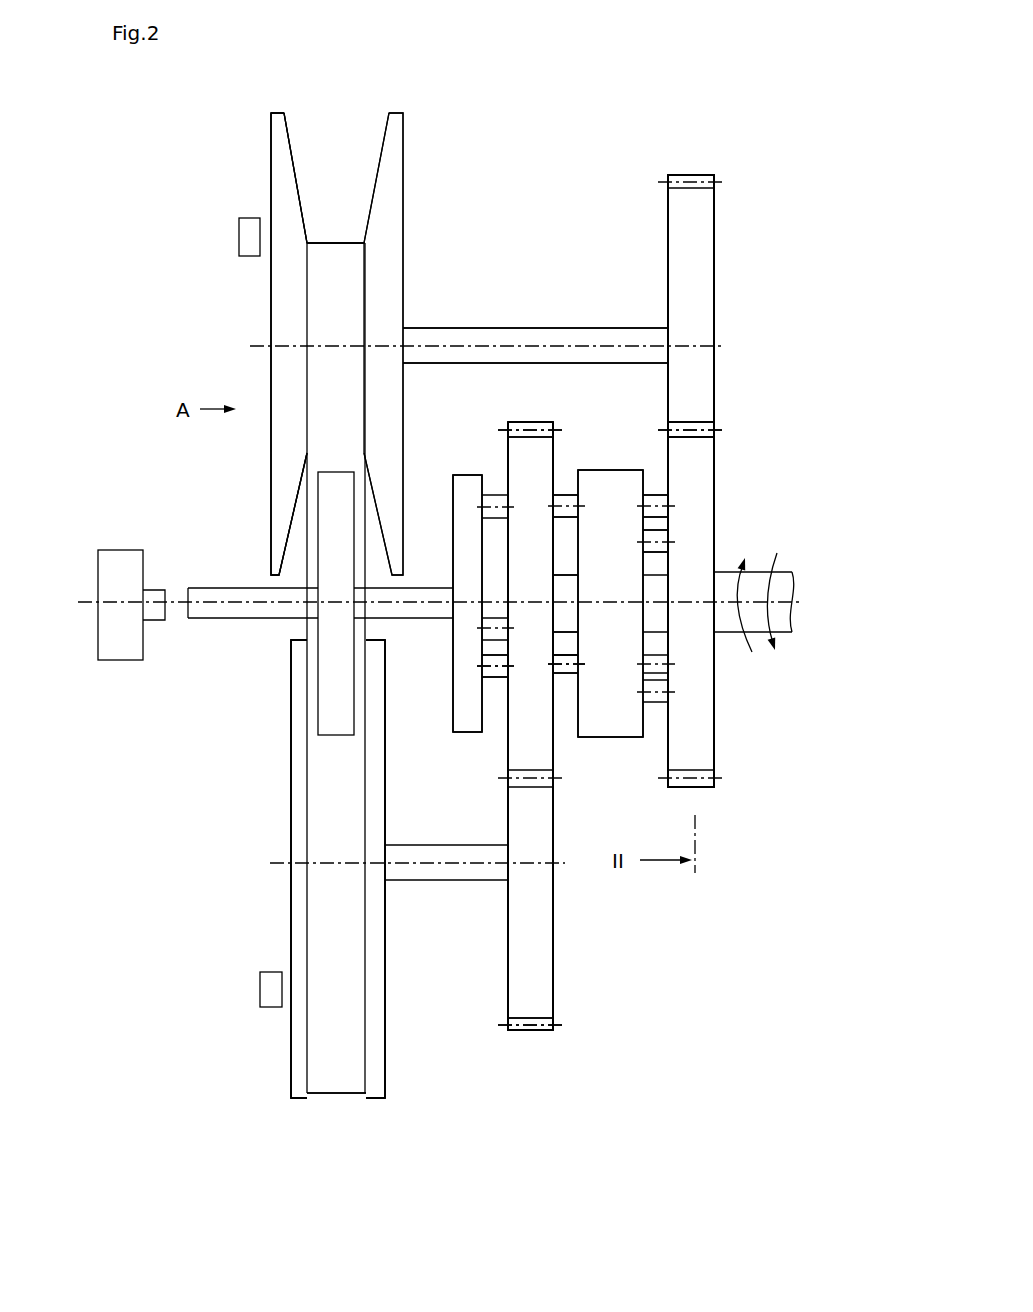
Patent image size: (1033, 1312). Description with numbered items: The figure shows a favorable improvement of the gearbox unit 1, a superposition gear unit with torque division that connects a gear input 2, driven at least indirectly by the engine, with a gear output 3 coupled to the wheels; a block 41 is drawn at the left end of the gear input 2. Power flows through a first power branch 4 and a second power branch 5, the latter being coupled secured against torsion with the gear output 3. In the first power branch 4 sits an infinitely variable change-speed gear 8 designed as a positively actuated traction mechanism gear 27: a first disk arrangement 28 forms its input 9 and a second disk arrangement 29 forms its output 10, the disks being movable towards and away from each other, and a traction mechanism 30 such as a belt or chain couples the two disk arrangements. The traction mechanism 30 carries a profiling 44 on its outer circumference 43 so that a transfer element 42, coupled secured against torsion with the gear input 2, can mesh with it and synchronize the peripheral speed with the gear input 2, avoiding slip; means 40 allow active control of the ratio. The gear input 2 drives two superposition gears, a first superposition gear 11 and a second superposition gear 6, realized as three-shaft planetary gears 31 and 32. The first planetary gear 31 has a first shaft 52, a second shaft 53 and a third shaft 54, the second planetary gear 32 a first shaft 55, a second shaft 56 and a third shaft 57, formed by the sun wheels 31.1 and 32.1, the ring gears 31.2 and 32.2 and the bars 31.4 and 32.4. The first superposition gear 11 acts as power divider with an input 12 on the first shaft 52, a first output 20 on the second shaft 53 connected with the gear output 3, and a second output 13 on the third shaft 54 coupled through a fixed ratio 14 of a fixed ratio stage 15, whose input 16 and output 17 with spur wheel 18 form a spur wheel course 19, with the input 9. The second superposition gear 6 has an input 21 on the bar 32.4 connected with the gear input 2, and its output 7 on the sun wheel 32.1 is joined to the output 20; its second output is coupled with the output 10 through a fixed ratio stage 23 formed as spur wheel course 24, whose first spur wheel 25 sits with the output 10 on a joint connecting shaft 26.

The gearbox unit 1 is at (497, 162).
The gear input 2 is at (226, 590).
The gear output 3 is at (778, 580).
The first power branch 4 is at (537, 1042).
The second power branch 5 is at (622, 375).
The second superposition gear 6 is at (722, 474).
The output of the second superposition gear 7 is at (660, 700).
The infinitely variable change-speed gear 8 is at (268, 921).
The input of the infinitely variable change-speed gear 9 is at (400, 853).
The output of the infinitely variable change-speed gear 10 is at (424, 335).
The first superposition gear 11 is at (488, 748).
The input of the first superposition gear 12 is at (440, 590).
The second output of the first superposition gear 13 is at (537, 443).
The fixed ratio 14 is at (570, 857).
The fixed ratio stage 15 is at (570, 857).
The input of the fixed ratio stage 16 is at (537, 443).
The output of the fixed ratio stage 17 is at (540, 930).
The spur wheel 18 is at (540, 930).
The spur wheel course 19 is at (570, 857).
The first output of the first superposition gear 20 is at (565, 622).
The input of the second superposition gear 21 is at (586, 684).
The fixed ratio stage 23 is at (750, 405).
The spur wheel course 24 is at (750, 405).
The first spur wheel 25 is at (697, 232).
The connecting shaft 26 is at (517, 327).
The traction mechanism gear 27 is at (320, 113).
The first disk arrangement 28 is at (297, 1060).
The second disk arrangement 29 is at (277, 170).
The traction mechanism 30 is at (340, 243).
The first planetary gear 31 is at (488, 748).
The sun wheel 31.1 is at (562, 495).
The ring gear 31.2 is at (512, 452).
The bar 31.4 is at (463, 688).
The second planetary gear 32 is at (722, 474).
The sun wheel 32.1 is at (657, 580).
The ring gear 32.2 is at (700, 445).
The bar 32.4 is at (610, 603).
The means 40 is at (239, 232).
The drive motor 41 is at (131, 605).
The transfer element 42 is at (328, 692).
The outer circumference 43 is at (327, 770).
The profiling 44 is at (327, 770).
The first shaft 52 is at (465, 610).
The second shaft 53 is at (562, 495).
The third shaft 54 is at (520, 440).
The first shaft 55 is at (610, 603).
The second shaft 56 is at (657, 580).
The third shaft 57 is at (700, 445).